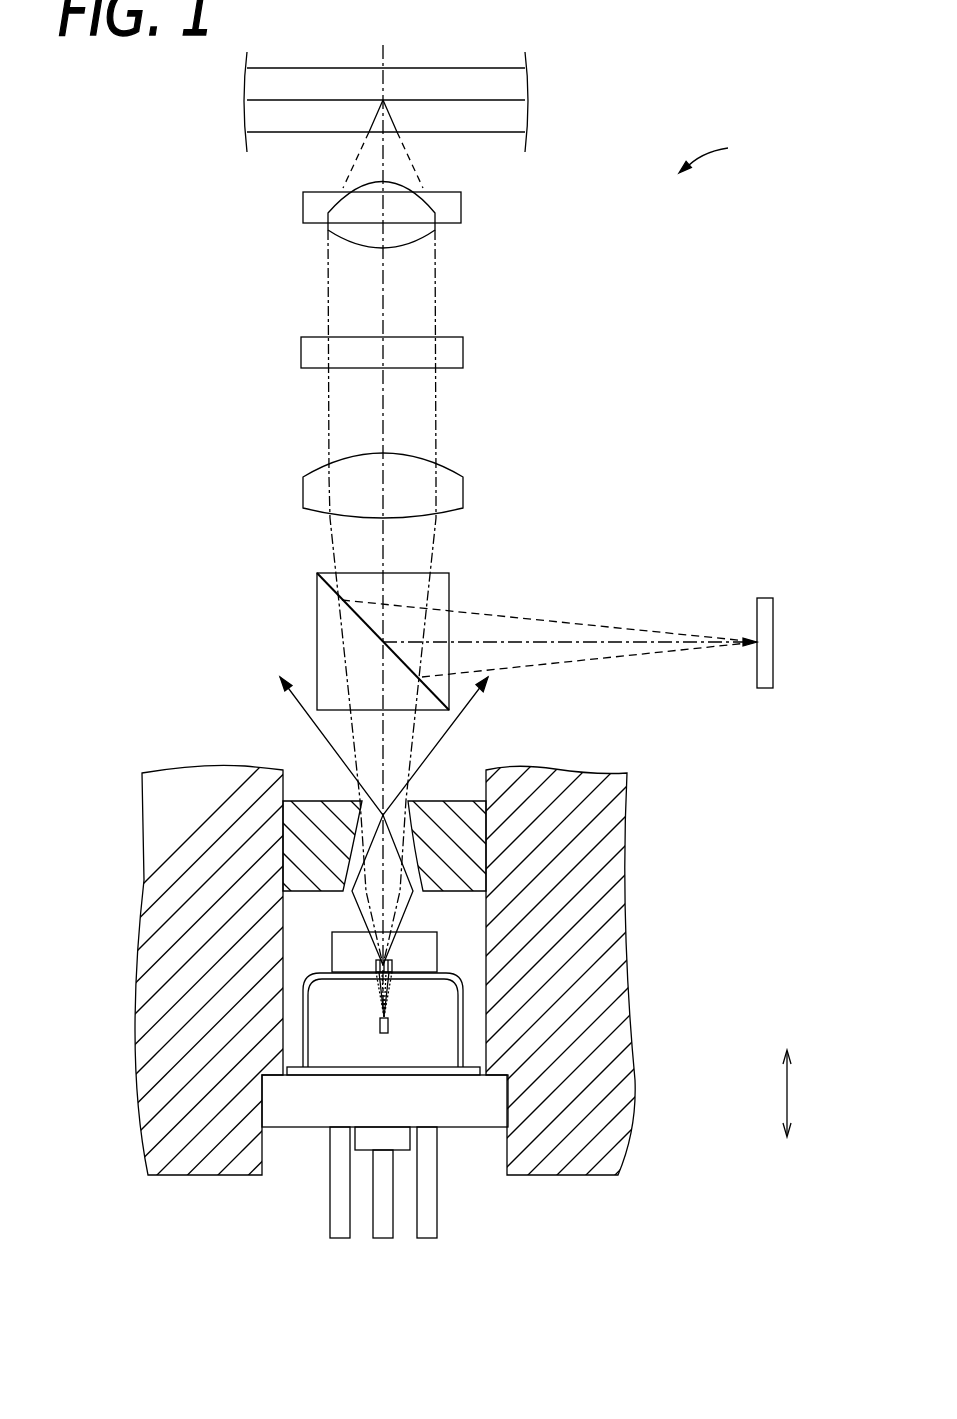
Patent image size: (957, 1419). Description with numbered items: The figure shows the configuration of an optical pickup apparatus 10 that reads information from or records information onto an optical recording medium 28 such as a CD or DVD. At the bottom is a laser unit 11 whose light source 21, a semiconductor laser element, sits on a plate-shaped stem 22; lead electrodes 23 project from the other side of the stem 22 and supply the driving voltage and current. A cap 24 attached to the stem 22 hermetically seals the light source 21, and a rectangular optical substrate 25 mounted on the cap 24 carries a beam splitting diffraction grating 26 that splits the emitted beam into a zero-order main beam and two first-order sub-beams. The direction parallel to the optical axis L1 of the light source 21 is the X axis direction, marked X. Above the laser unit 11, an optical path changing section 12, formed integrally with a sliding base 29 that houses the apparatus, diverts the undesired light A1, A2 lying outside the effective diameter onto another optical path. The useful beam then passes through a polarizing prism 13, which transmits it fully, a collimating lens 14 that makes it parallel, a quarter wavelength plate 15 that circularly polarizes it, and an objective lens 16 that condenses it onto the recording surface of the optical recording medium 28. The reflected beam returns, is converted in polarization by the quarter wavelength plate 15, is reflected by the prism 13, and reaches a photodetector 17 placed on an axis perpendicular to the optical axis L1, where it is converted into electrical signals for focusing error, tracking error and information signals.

The optical pickup apparatus 10 is at (720, 149).
The laser unit 11 is at (405, 1104).
The optical path changing section 12 is at (441, 797).
The prism 13 is at (440, 590).
The collimating lens 14 is at (454, 493).
The quarter wavelength plate 15 is at (454, 352).
The objective lens 16 is at (455, 212).
The photodetector 17 is at (765, 600).
The light source 21 is at (390, 1026).
The stem 22 is at (291, 1120).
The lead electrodes 23 is at (340, 1238).
The cap 24 is at (316, 985).
The optical substrate 25 is at (410, 928).
The beam splitting diffraction grating 26 is at (394, 966).
The optical recording medium 28 is at (289, 80).
The sliding base 29 is at (150, 828).
The undesired light A1 is at (450, 718).
The undesired light A2 is at (322, 732).
The optical axis L1 is at (384, 50).
The X axis direction X is at (790, 1095).